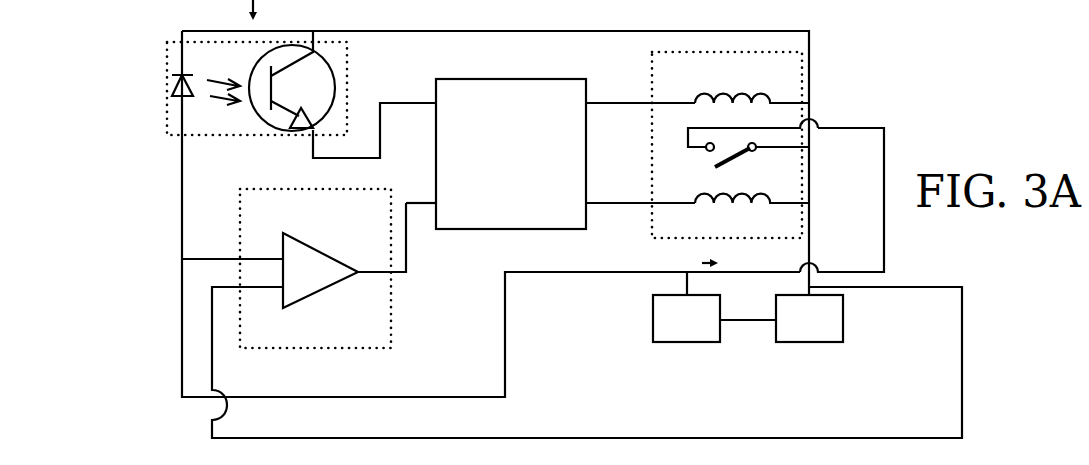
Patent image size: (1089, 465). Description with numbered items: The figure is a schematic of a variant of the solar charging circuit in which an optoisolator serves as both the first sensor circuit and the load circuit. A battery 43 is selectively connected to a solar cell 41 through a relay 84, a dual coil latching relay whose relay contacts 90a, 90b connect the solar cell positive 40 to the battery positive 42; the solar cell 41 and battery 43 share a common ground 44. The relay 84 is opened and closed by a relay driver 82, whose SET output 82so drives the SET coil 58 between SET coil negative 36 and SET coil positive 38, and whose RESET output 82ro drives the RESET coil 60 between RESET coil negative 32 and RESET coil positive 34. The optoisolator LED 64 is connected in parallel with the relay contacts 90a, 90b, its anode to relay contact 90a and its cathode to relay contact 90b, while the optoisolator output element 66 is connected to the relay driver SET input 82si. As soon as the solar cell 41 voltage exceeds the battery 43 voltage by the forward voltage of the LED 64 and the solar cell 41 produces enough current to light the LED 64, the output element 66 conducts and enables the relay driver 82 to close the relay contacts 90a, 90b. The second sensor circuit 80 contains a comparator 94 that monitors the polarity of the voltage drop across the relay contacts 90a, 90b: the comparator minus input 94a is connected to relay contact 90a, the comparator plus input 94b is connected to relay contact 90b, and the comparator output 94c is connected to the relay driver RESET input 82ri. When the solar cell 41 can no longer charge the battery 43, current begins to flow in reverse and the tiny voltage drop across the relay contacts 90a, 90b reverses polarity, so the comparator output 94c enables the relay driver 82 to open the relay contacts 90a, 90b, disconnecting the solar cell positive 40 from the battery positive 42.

The optoisolator LED 64 is at (186, 97).
The optoisolator output element 66 is at (292, 81).
The relay driver 82 is at (510, 71).
The relay driver SET input 82si is at (437, 103).
The relay driver SET output 82so is at (585, 103).
The relay driver RESET input 82ri is at (437, 203).
The relay driver RESET output 82ro is at (585, 203).
The relay 84 is at (645, 80).
The SET coil negative 36 is at (662, 103).
The SET coil 58 is at (763, 92).
The SET coil positive 38 is at (803, 100).
The relay contact 90a is at (706, 150).
The relay contact 90b is at (753, 151).
The RESET coil negative 32 is at (663, 228).
The RESET coil 60 is at (752, 203).
The RESET coil positive 34 is at (802, 207).
The second sensor circuit 80 is at (310, 358).
The comparator 94 is at (320, 270).
The comparator minus input 94a is at (283, 256).
The comparator plus input 94b is at (283, 289).
The comparator output 94c is at (360, 272).
The solar cell positive 40 is at (686, 292).
The solar cell 41 is at (642, 320).
The battery positive 42 is at (800, 306).
The battery 43 is at (856, 318).
The ground 44 is at (752, 322).